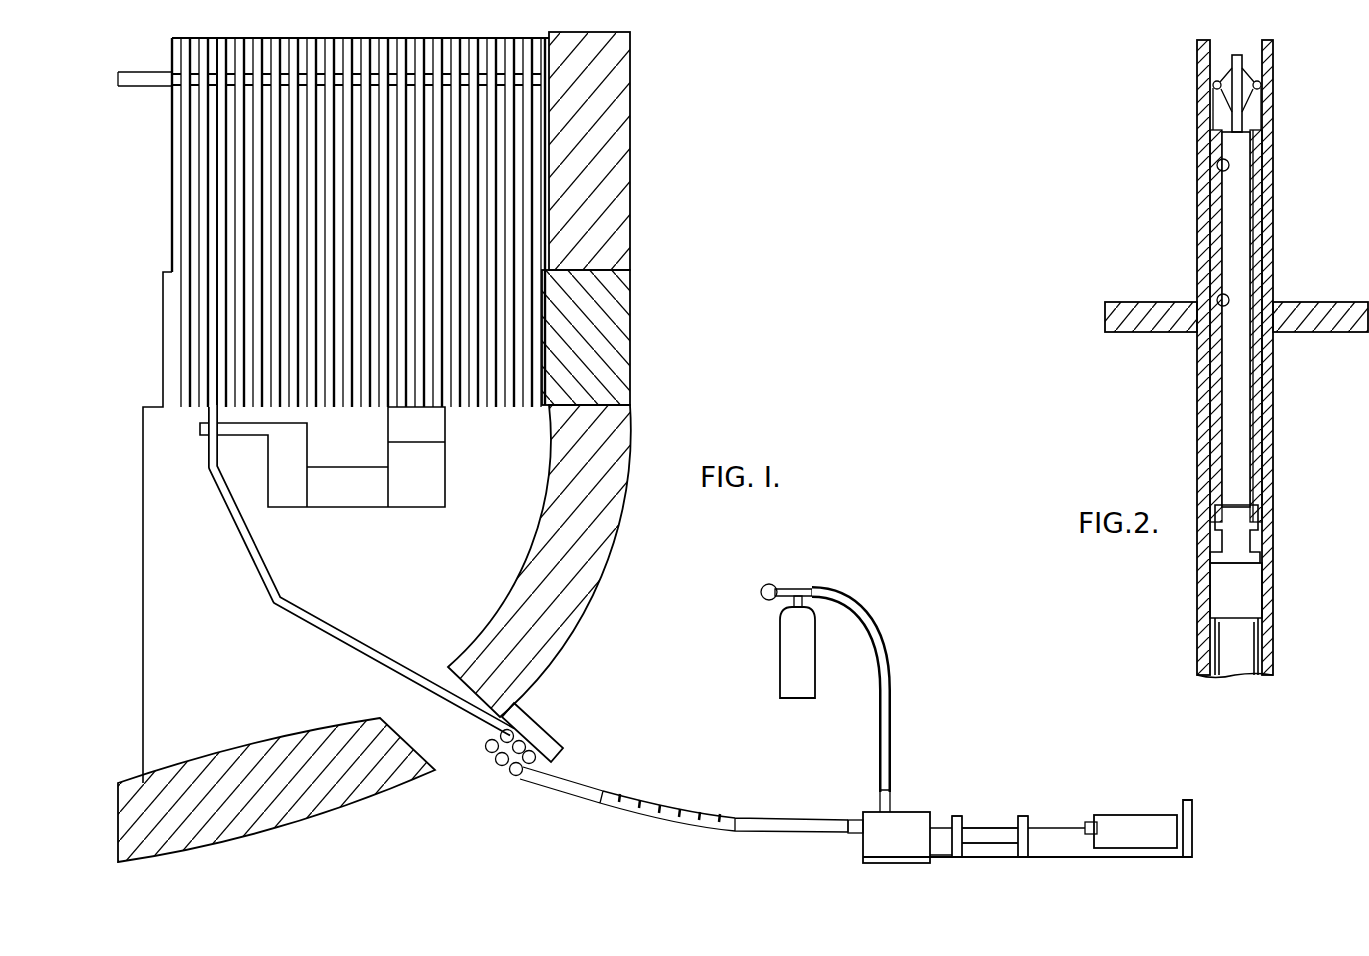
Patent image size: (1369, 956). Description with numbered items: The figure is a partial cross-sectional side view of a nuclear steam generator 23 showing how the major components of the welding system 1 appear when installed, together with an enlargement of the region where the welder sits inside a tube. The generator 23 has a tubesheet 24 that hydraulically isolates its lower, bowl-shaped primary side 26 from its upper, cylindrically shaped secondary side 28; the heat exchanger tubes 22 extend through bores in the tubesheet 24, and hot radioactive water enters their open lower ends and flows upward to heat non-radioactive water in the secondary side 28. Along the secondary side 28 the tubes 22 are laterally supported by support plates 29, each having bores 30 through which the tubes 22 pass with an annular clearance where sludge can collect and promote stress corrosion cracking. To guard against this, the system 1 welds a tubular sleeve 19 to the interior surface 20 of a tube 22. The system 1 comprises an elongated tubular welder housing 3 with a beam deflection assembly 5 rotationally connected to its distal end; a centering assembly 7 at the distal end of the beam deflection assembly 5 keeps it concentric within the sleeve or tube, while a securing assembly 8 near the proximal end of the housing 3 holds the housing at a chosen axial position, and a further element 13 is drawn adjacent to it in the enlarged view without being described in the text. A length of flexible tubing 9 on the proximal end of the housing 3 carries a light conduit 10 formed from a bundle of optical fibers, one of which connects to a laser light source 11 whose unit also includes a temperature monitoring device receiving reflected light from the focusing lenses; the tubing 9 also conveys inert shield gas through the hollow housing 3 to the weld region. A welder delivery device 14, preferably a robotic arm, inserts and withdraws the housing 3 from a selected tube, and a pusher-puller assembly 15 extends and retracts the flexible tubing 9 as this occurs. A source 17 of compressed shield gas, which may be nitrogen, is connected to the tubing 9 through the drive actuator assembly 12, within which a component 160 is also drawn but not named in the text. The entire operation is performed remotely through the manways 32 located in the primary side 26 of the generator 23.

In FIG. 1, the welding system 1 is at (205, 150).
In FIG. 1, the welder housing 3 is at (215, 219).
In FIG. 2, the welder housing 3 is at (1240, 263).
In FIG. 2, the beam deflection assembly 5 is at (1260, 212).
In FIG. 2, the centering assembly 7 is at (1240, 120).
In FIG. 2, the securing assembly 8 is at (1268, 594).
In FIG. 1, the flexible tubing 9 is at (240, 528).
In FIG. 1, the light conduit 10 is at (676, 808).
In FIG. 1, the laser light source 11 is at (1150, 842).
In FIG. 1, the drive actuator assembly 12 is at (1046, 800).
In FIG. 2, the piston 13 is at (1240, 513).
In FIG. 1, the welder delivery device 14 is at (356, 499).
In FIG. 1, the pusher-puller assembly 15 is at (532, 746).
In FIG. 1, the source of compressed shield gas 17 is at (780, 643).
In FIG. 2, the tubular sleeve 19 is at (1258, 433).
In FIG. 2, the interior surface 20 is at (1216, 160).
In FIG. 2, the heat exchanger tube 22 is at (1202, 219).
In FIG. 1, the nuclear steam generator 23 is at (552, 78).
In FIG. 1, the tubesheet 24 is at (600, 346).
In FIG. 1, the primary side 26 is at (582, 624).
In FIG. 1, the secondary side 28 is at (636, 212).
In FIG. 2, the support plate 29 is at (1316, 318).
In FIG. 2, the bore 30 is at (1222, 300).
In FIG. 1, the manway 32 is at (416, 752).
In FIG. 1, the hydraulic cylinder 160 is at (975, 828).